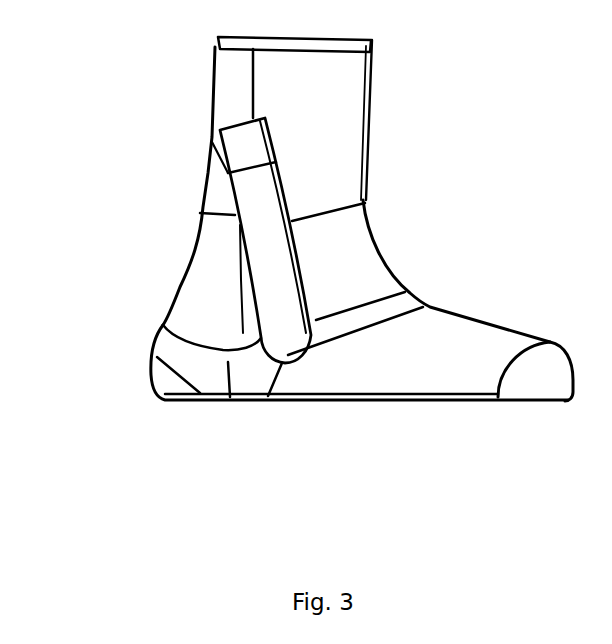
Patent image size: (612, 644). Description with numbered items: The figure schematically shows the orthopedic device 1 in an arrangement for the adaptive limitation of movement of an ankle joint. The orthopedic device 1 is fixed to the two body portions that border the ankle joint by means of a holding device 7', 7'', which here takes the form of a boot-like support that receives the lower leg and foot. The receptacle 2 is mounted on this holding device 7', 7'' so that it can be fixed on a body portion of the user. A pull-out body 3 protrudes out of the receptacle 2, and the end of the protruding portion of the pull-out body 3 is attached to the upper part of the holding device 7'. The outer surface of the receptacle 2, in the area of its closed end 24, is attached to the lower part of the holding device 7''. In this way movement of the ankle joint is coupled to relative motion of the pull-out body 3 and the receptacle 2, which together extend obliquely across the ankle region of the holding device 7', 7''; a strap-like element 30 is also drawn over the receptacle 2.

The orthopedic device 1 is at (293, 295).
The receptacle 2 is at (297, 207).
The pull-out body 3 is at (212, 140).
The holding device 7' is at (353, 77).
The holding device 7'' is at (433, 271).
The closed end 24 is at (362, 430).
The closure strap 30 is at (243, 143).